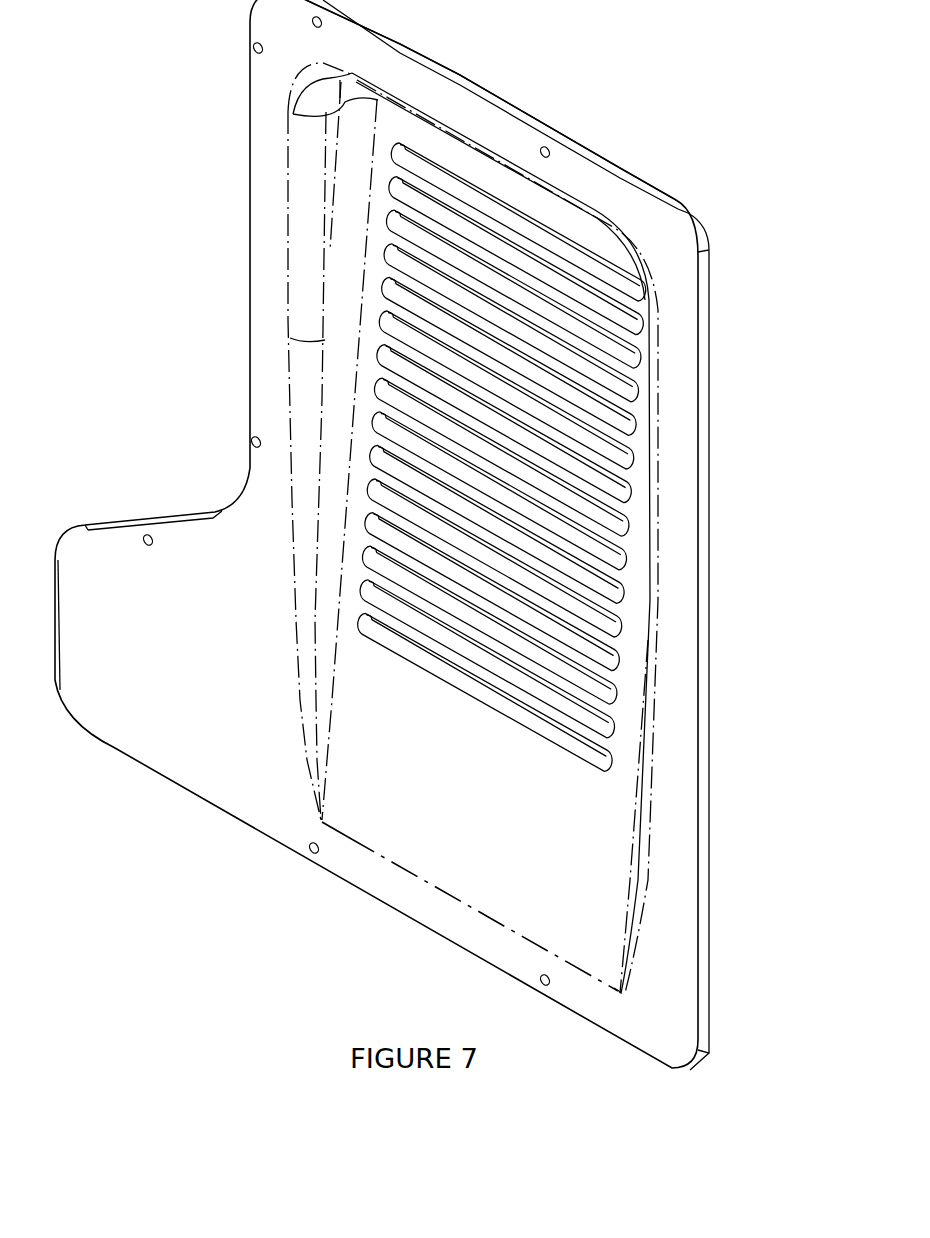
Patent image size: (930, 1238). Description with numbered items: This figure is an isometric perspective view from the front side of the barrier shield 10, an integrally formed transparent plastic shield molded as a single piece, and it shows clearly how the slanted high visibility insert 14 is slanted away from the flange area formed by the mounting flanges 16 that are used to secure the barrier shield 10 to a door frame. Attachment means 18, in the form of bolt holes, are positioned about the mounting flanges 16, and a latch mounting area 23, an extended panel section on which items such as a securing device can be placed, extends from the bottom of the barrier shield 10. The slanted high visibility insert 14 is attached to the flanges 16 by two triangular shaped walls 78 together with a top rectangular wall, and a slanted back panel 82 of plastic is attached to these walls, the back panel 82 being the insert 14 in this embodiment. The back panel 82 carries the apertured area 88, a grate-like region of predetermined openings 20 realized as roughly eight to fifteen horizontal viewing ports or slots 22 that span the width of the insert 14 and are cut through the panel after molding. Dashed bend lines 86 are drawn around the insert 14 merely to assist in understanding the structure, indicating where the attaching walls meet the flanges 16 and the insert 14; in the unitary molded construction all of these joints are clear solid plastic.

The barrier shield 10 is at (205, 830).
The slanted high visibility insert 14 is at (517, 192).
The mounting flanges 16 is at (252, 343).
The attachment means 18 is at (252, 48).
The predetermined openings 20 is at (540, 742).
The horizontal viewing ports or slots 22 is at (627, 637).
The latch mounting area 23 is at (163, 723).
The triangular shaped walls 78 is at (317, 193).
The slanted back panel 82 is at (447, 773).
The bend lines 86 is at (596, 213).
The apertured area 88 is at (647, 450).